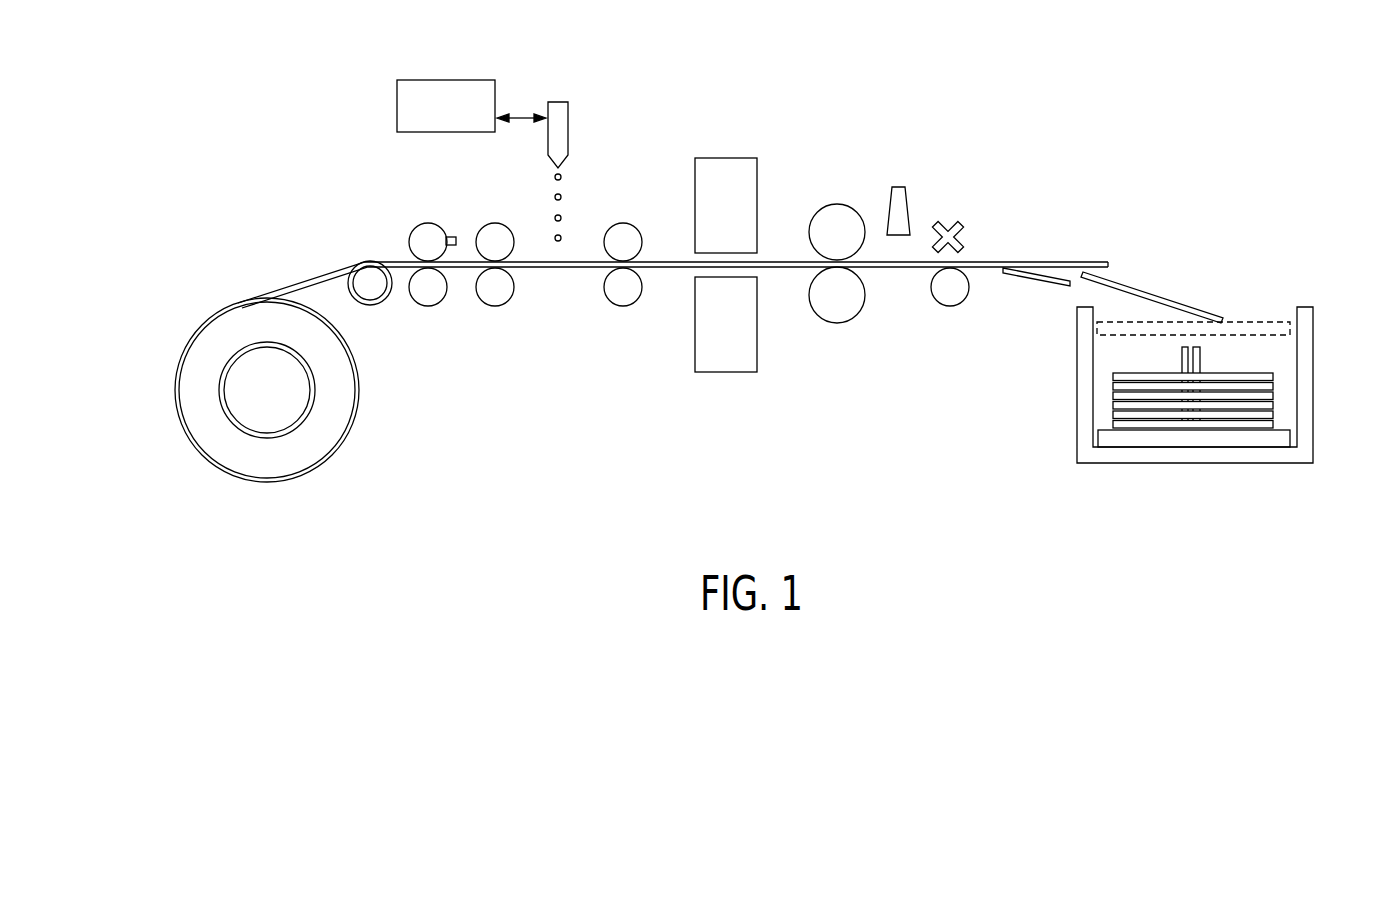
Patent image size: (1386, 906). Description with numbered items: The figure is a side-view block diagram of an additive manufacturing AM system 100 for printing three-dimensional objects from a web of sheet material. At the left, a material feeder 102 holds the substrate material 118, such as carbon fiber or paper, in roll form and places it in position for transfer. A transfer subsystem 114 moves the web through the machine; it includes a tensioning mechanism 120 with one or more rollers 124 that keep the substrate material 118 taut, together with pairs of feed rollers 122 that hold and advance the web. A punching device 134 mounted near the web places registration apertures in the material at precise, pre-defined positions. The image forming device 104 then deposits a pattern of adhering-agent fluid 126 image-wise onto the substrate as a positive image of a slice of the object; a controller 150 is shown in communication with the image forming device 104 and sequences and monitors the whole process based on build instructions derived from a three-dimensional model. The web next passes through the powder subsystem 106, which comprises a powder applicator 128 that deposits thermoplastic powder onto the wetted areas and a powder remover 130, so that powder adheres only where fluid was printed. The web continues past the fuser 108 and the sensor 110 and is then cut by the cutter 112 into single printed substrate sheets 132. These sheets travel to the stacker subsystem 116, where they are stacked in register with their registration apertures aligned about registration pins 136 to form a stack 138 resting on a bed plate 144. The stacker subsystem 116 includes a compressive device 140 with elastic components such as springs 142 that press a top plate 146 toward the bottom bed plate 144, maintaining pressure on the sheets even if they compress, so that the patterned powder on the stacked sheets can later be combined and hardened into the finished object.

The AM system 100 is at (297, 107).
The material feeder 102 is at (262, 483).
The image forming device 104 is at (560, 102).
The powder subsystem 106 is at (739, 258).
The fuser 108 is at (838, 205).
The sensor 110 is at (897, 186).
The cutter 112 is at (950, 220).
The transfer subsystem 114 is at (378, 231).
The stacker subsystem 116 is at (1175, 389).
The substrate material 118 is at (306, 279).
The tensioning mechanism 120 is at (334, 236).
The feed rollers 122 is at (495, 223).
The rollers 124 is at (372, 305).
The fluid 126 is at (565, 197).
The powder applicator 128 is at (722, 157).
The powder remover 130 is at (728, 372).
The substrate sheets 132 is at (1130, 283).
The punching device 134 is at (428, 223).
The registration pins 136 is at (1180, 367).
The stack 138 is at (1096, 393).
The compressive device 140 is at (1293, 292).
The springs 142 is at (1207, 303).
The bed plate 144 is at (1098, 437).
The top plate 146 is at (1253, 318).
The controller 150 is at (445, 80).